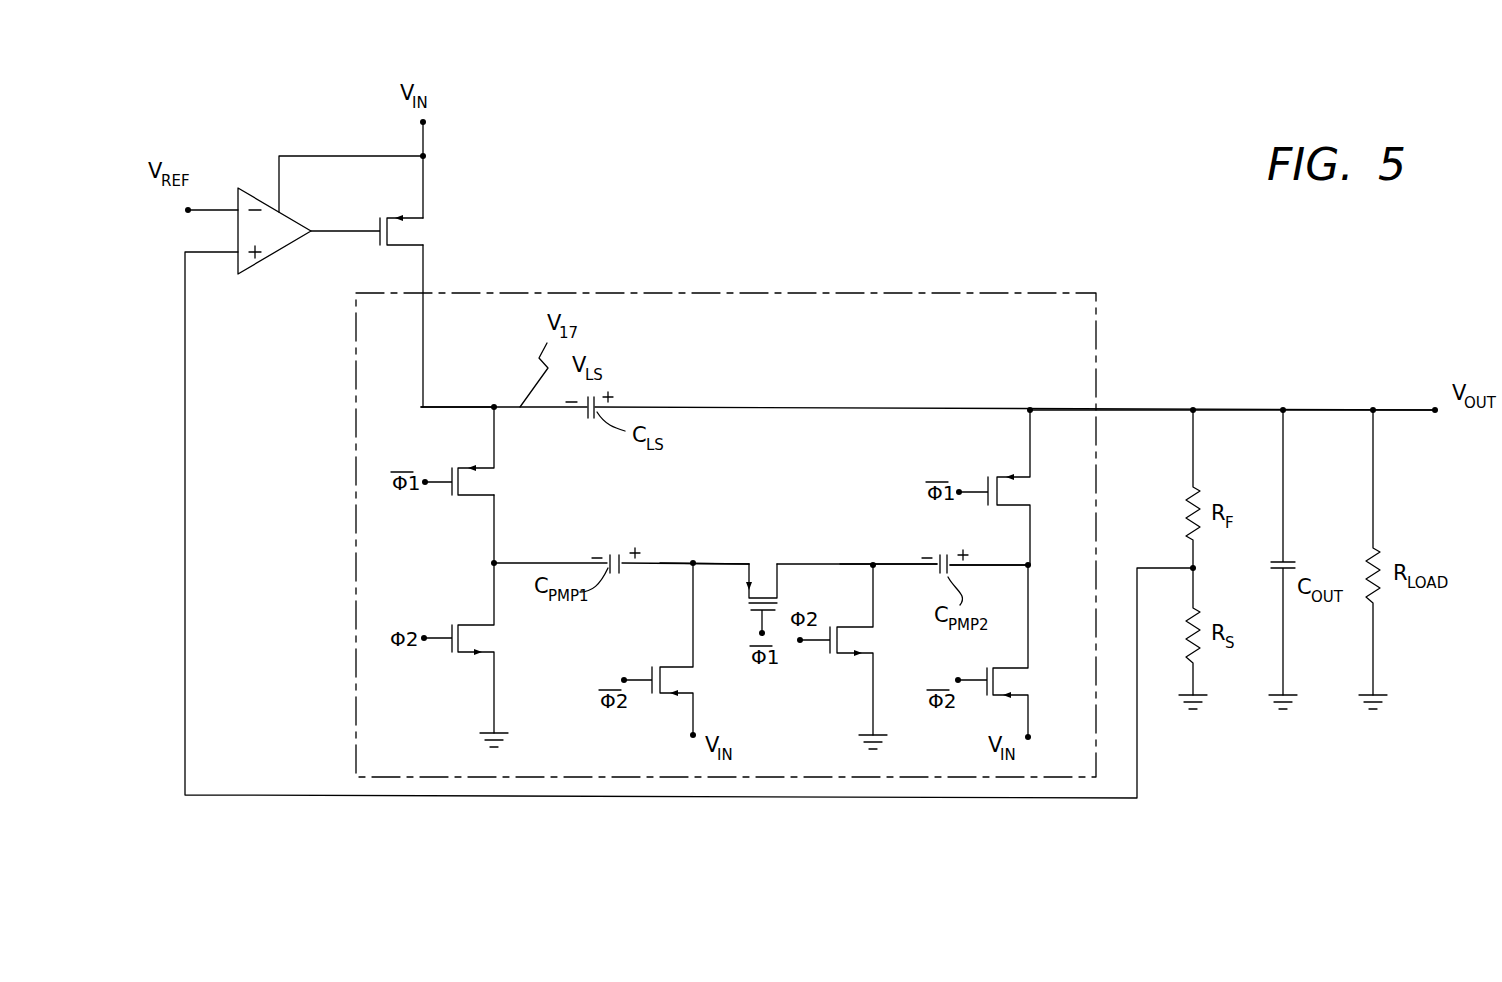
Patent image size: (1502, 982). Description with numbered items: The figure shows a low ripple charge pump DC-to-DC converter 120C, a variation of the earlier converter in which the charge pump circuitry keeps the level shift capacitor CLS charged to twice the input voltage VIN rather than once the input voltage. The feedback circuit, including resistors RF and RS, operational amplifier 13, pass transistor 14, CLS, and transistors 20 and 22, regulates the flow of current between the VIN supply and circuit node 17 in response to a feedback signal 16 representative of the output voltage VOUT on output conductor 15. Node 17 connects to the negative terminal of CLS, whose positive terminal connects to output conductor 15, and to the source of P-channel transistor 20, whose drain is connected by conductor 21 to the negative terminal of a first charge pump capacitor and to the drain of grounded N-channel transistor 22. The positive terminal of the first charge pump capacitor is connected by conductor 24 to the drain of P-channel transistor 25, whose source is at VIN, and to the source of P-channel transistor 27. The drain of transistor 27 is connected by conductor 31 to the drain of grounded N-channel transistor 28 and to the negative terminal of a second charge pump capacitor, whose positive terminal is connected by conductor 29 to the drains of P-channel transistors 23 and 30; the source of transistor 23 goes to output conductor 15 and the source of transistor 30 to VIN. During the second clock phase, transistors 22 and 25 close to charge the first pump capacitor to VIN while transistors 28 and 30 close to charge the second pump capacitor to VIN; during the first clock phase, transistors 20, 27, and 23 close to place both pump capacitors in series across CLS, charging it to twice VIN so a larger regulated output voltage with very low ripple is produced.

The operational amplifier 13 is at (275, 246).
The pass transistor 14 is at (397, 232).
The output conductor 15 is at (1057, 409).
The feedback signal 16 is at (185, 623).
The circuit node 17 is at (439, 407).
The P-channel transistor 20 is at (465, 487).
The conductor 21 is at (515, 562).
The N-channel transistor 22 is at (465, 647).
The P-channel transistor 23 is at (1003, 493).
The conductor 24 is at (692, 562).
The P-channel transistor 25 is at (665, 683).
The P-channel transistor 27 is at (765, 592).
The N-channel transistor 28 is at (842, 637).
The conductor 29 is at (990, 562).
The P-channel transistor 30 is at (1000, 683).
The conductor 31 is at (873, 565).
The DC-to-DC converter 120C is at (383, 843).